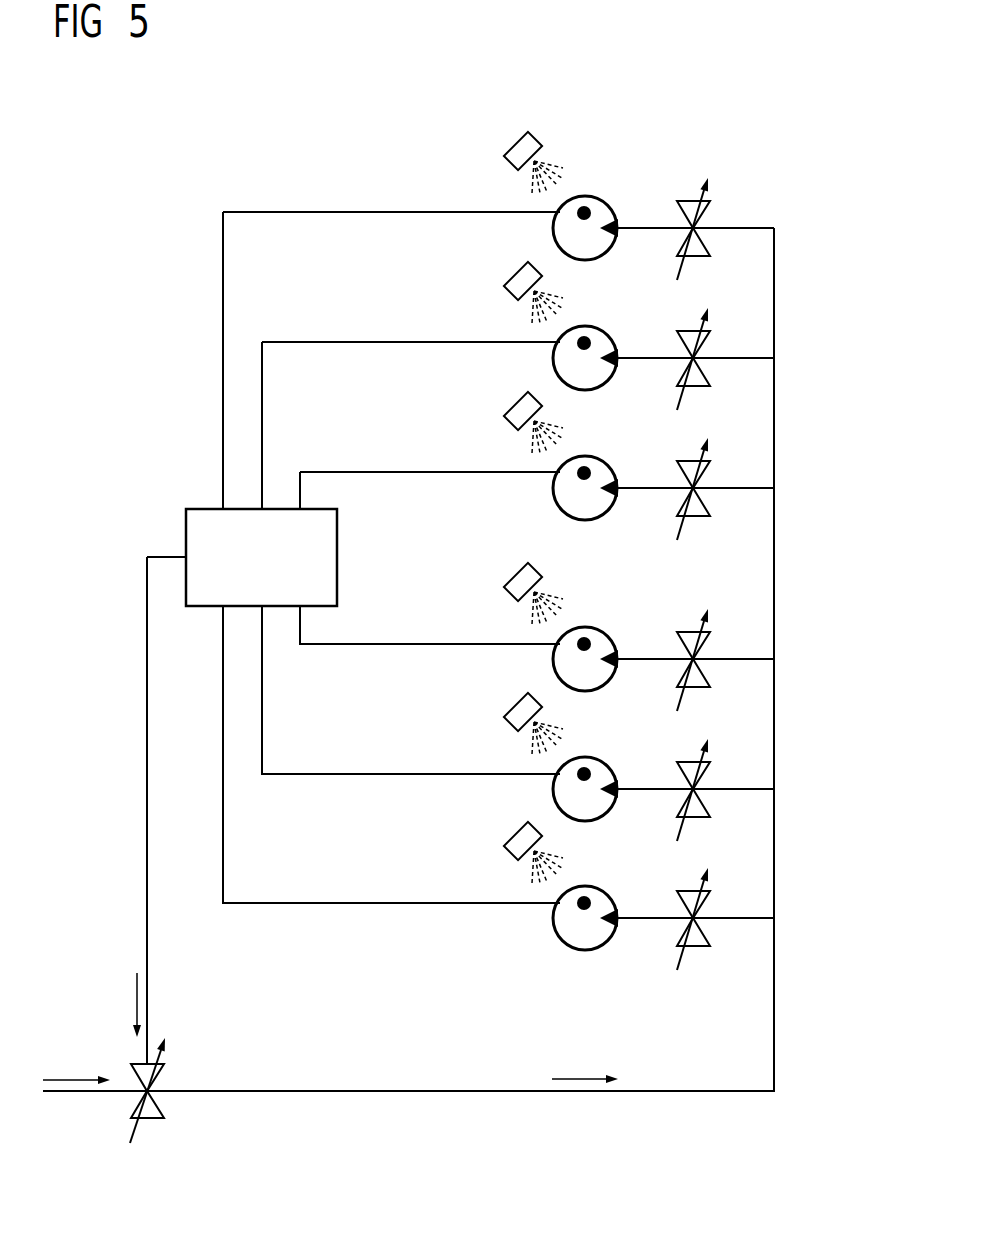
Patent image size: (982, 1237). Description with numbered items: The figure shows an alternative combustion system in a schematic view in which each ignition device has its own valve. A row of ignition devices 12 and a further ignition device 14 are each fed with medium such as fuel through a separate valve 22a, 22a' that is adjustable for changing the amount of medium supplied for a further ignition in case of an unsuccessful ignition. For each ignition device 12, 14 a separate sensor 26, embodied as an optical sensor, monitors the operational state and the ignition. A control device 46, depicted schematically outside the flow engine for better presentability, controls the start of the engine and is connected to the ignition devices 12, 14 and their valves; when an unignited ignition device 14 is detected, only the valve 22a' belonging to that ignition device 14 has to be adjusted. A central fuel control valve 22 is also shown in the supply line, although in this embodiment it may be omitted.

The ignition device 12 is at (663, 493).
The ignition device 14 is at (663, 902).
The fuel control valve 22 is at (165, 1110).
The valve 22a is at (763, 509).
The valve 22a' is at (765, 919).
The sensor 26 is at (503, 500).
The control device 46 is at (337, 537).